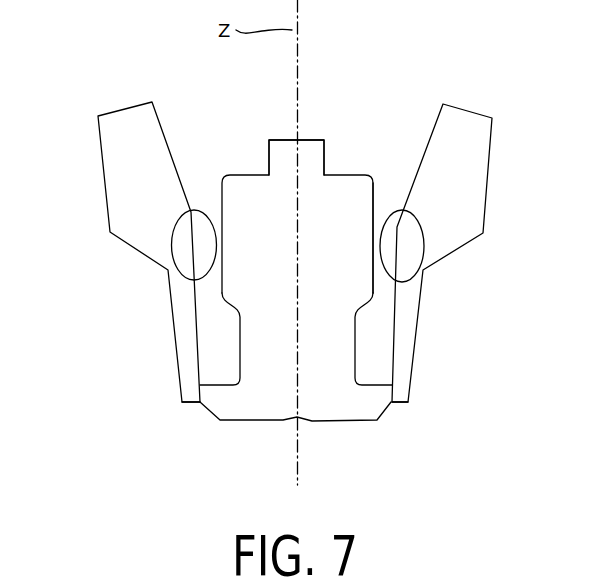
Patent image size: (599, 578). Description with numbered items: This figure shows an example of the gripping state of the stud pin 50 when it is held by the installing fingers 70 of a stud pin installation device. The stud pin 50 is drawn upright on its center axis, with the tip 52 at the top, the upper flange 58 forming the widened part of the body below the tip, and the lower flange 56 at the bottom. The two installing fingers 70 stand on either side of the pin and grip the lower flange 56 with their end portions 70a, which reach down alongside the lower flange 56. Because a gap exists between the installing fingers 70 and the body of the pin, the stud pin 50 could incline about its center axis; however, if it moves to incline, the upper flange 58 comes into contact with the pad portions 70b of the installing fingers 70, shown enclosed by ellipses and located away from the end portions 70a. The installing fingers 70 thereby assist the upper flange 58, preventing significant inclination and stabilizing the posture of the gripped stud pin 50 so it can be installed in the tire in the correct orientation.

The stud pin 50 is at (304, 258).
The tip 52 is at (307, 153).
The lower flange 56 is at (340, 398).
The upper flange 58 is at (368, 213).
The installing fingers 70 is at (100, 98).
The end portions 70a is at (190, 373).
The portions (pads) 70b is at (168, 288).